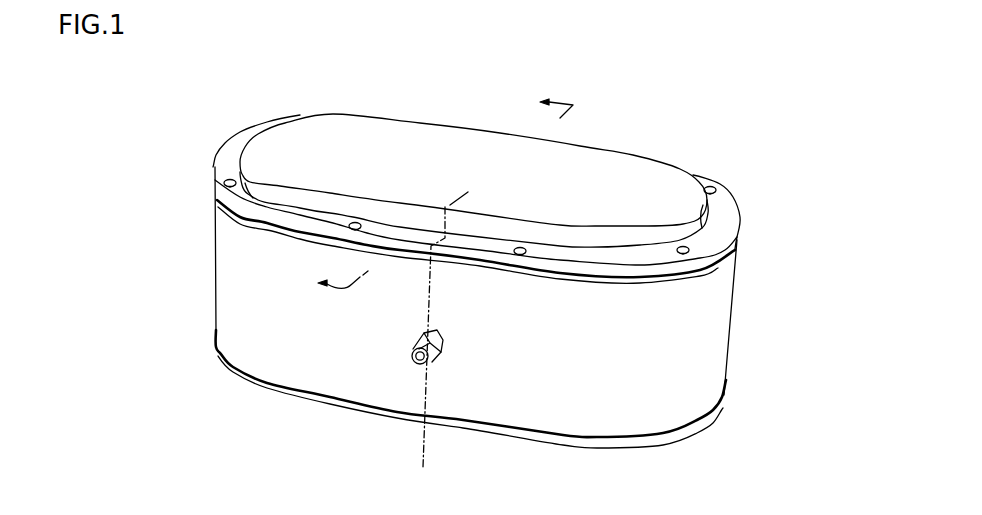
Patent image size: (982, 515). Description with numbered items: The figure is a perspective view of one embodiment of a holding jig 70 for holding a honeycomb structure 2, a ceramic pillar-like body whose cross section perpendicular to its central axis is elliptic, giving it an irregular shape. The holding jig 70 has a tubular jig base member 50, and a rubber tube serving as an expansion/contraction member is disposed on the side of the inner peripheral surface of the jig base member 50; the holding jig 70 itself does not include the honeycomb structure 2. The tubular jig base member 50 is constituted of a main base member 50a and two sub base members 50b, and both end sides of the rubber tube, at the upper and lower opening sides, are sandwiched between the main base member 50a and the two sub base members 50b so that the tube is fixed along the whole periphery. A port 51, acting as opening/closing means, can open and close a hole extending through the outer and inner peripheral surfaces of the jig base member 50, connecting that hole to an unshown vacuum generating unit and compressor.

The honeycomb structure 2 is at (633, 163).
The holding jig 70 is at (748, 122).
The tubular jig base member 50 is at (810, 258).
The main base member 50a is at (718, 324).
The sub base member 50b is at (737, 247).
The port 51 is at (415, 363).